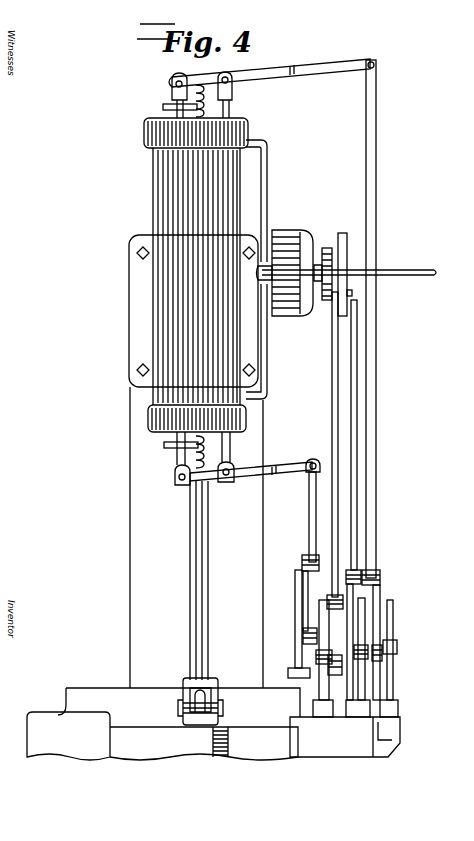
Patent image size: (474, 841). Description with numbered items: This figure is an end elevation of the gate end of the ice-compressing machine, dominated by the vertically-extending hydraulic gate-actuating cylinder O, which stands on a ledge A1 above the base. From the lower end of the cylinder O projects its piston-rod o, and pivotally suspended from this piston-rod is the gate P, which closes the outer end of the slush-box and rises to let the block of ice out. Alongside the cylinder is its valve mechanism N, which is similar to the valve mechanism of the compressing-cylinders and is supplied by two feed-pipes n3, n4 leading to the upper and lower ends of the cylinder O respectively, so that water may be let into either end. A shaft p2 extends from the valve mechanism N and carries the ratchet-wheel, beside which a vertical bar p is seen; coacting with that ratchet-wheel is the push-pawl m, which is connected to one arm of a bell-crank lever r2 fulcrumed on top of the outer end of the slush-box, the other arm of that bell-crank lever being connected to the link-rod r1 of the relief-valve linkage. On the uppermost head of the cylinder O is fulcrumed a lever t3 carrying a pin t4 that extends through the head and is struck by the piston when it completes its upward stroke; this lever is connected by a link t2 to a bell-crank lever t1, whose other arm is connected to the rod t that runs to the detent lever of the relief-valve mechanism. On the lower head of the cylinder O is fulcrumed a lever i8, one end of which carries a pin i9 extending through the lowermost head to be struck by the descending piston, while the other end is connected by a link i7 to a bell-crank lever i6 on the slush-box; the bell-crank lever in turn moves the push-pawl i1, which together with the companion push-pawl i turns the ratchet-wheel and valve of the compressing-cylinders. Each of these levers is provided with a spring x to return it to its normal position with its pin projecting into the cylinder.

The base ledge A1 is at (119, 688).
The gate P is at (268, 757).
The gate-actuating cylinder O is at (160, 216).
The feed-pipe n3 is at (268, 184).
The feed-pipe n4 is at (268, 373).
The valve mechanism N is at (291, 232).
The shaft p2 is at (412, 270).
The vertical bar p is at (346, 233).
The push-pawl m is at (331, 337).
The push-pawl i is at (344, 334).
The lever t3 is at (320, 76).
The pin t4 is at (170, 82).
The spring x is at (233, 103).
The pin i9 is at (175, 480).
The lever i8 is at (277, 464).
The link i7 is at (309, 525).
The bell-crank lever i6 is at (303, 609).
The push-pawl i1 is at (303, 641).
The bell-crank lever r2 is at (329, 652).
The link-rod r1 is at (337, 676).
The bell-crank lever t1 is at (354, 596).
The rod t is at (380, 653).
The link t2 is at (378, 534).
The piston-rod o is at (190, 568).